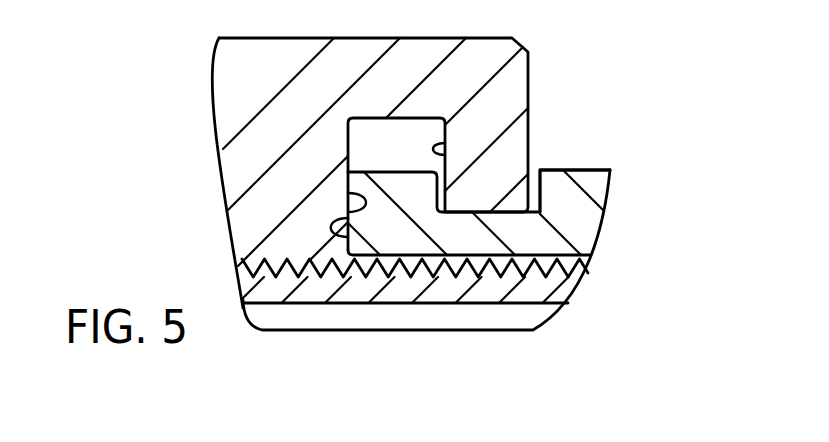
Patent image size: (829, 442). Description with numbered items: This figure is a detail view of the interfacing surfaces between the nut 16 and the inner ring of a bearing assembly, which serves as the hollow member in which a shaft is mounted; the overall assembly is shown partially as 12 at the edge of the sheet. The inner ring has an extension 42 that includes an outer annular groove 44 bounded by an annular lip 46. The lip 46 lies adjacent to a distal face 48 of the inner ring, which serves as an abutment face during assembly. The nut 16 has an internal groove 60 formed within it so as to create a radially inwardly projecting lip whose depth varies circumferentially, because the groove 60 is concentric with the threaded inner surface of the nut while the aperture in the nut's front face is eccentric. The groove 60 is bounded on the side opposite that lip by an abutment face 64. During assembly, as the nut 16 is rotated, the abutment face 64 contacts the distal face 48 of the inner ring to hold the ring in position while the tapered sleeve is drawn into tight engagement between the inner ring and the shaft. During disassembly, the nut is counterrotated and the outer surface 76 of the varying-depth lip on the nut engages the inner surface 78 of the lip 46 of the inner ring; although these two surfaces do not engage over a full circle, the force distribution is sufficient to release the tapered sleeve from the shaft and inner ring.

The lamp assembly 12 is at (612, 5).
The nut 16 is at (280, 53).
The extension 42 is at (563, 192).
The outer annular groove 44 is at (495, 215).
The annular lip 46 is at (396, 188).
The distal face 48 is at (348, 237).
The internal groove 60 is at (400, 142).
The abutment face 64 is at (348, 193).
The outer surface 76 is at (445, 148).
The inner surface 78 is at (445, 200).